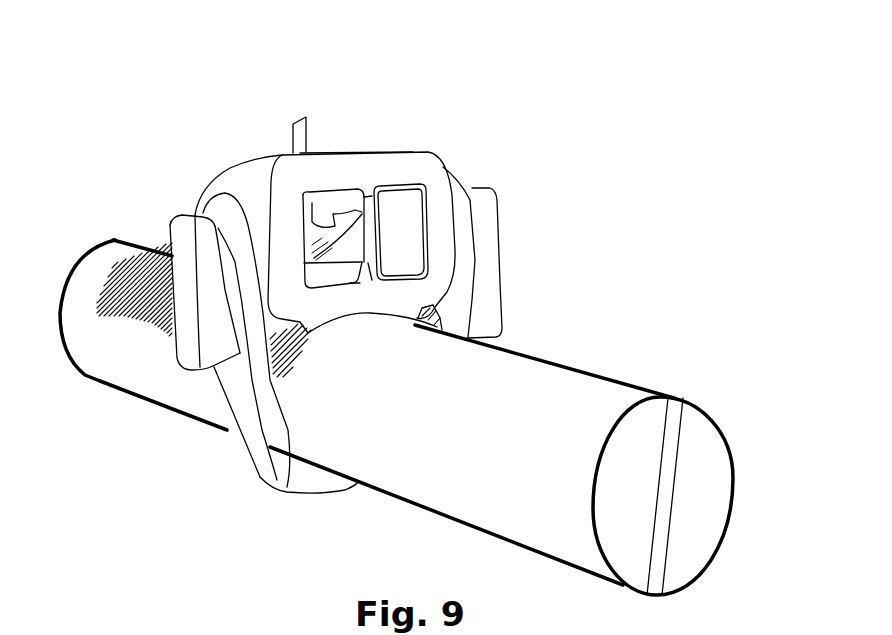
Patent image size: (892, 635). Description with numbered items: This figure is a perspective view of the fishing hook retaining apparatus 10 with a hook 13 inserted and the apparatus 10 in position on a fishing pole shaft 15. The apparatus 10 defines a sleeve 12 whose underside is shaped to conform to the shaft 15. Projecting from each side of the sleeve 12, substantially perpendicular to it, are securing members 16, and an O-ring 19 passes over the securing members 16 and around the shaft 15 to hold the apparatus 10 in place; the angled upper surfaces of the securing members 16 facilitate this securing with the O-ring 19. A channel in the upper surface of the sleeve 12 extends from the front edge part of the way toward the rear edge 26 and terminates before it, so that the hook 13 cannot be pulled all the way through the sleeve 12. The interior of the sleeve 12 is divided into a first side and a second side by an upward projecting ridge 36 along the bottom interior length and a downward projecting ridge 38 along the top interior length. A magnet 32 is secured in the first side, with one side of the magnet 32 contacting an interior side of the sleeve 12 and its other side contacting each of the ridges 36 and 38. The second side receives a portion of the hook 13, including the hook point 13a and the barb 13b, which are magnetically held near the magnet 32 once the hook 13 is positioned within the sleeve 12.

The fishing hook retaining apparatus 10 is at (226, 112).
The sleeve 12 is at (399, 143).
The hook 13 is at (294, 126).
The hook point 13a is at (372, 280).
The barb 13b is at (312, 205).
The fishing pole shaft 15 is at (537, 360).
The securing members 16 is at (193, 302).
The O-ring 19 is at (292, 452).
The rear edge 26 is at (348, 167).
The magnet 32 is at (393, 238).
The upward projecting ridge 36 is at (355, 285).
The downward projecting ridge 38 is at (364, 197).